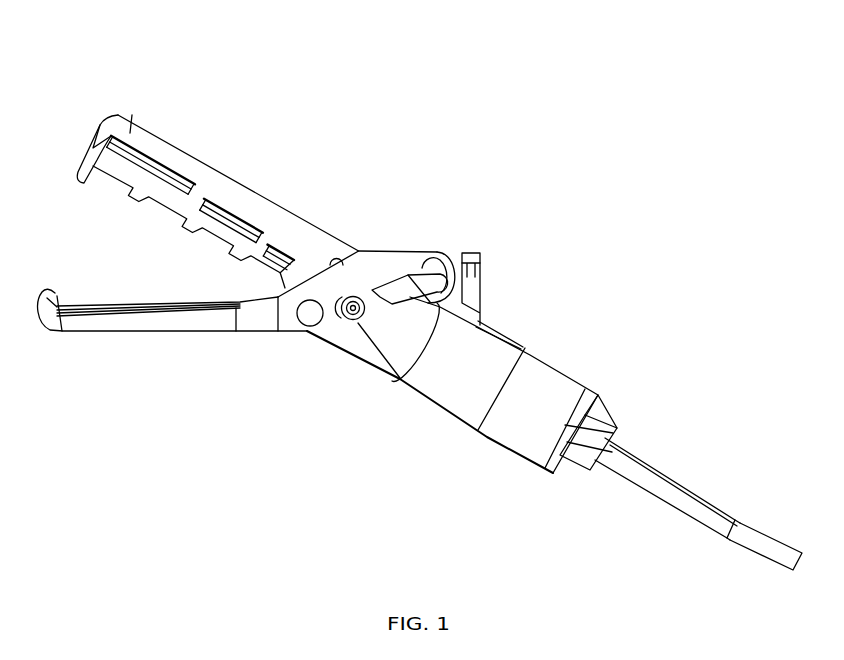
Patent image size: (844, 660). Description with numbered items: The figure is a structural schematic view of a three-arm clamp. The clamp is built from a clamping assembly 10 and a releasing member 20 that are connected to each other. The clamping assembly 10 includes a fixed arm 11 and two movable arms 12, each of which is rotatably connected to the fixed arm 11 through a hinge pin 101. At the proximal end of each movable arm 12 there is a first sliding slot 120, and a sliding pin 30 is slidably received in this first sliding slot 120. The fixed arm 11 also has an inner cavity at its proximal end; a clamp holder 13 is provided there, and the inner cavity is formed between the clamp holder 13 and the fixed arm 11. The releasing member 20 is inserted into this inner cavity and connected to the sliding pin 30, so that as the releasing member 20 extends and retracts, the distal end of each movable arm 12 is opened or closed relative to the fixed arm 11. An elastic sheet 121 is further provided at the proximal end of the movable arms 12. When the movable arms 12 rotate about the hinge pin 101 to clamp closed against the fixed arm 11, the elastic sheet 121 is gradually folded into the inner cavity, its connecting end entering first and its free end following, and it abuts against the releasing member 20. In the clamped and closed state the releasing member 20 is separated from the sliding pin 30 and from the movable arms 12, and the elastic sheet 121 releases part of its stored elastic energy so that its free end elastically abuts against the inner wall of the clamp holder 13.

The clamping assembly 10 is at (360, 72).
The fixed arm 11 is at (192, 212).
The movable arm 12 is at (173, 157).
The first sliding slot 120 is at (432, 252).
The elastic sheet 121 is at (477, 253).
The clamp holder 13 is at (474, 372).
The releasing member 20 is at (390, 340).
The sliding pin 30 is at (353, 309).
The hinge pin 101 is at (309, 315).